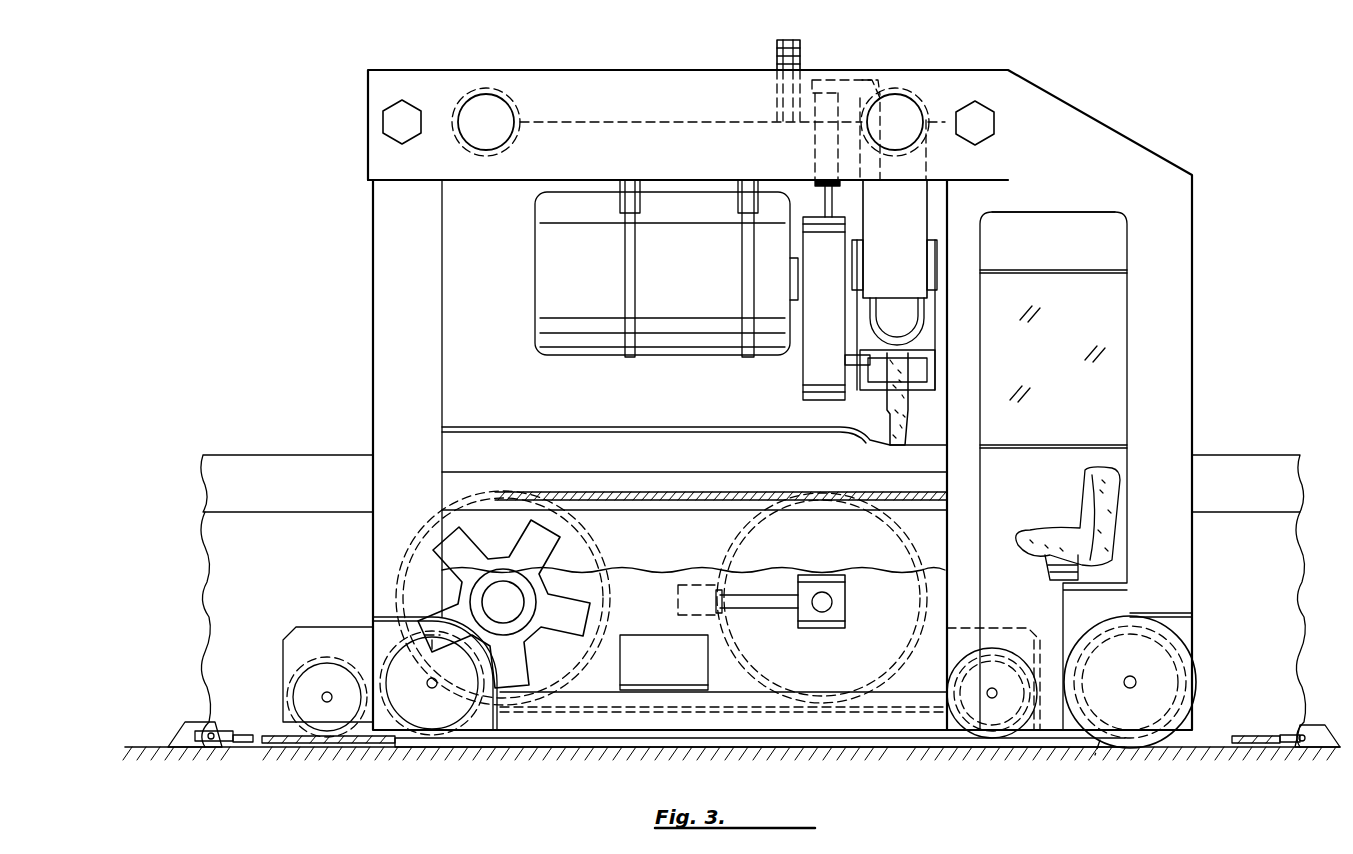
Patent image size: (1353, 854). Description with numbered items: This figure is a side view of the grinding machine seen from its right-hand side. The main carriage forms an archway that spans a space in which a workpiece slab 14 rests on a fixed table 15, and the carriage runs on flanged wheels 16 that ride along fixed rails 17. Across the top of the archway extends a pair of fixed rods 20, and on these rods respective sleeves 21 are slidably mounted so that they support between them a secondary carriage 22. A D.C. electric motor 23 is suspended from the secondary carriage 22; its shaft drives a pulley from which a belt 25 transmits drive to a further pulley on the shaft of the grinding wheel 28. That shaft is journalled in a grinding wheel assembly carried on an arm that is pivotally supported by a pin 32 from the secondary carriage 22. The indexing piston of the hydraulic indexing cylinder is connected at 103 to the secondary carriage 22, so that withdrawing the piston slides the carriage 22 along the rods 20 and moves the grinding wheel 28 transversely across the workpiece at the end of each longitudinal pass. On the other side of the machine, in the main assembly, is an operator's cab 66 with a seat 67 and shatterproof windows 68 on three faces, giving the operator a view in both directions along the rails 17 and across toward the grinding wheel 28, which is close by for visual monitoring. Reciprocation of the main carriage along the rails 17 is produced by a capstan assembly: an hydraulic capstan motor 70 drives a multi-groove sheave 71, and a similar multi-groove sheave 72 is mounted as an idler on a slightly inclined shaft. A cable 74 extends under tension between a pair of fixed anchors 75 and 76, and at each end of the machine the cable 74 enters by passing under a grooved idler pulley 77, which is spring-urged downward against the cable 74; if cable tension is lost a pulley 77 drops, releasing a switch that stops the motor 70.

The workpiece slab 14 is at (268, 463).
The fixed table 15 is at (226, 527).
The flanged wheels 16 is at (468, 735).
The fixed rails 17 is at (898, 744).
The fixed rods 20 is at (487, 100).
The sleeves 21 is at (893, 108).
The secondary carriage 22 is at (748, 240).
The D.C. electric motor 23 is at (541, 291).
The belt 25 is at (812, 381).
The grinding wheel 28 is at (905, 432).
The pin 32 is at (920, 268).
The operator's cab 66 is at (1145, 380).
The seat 67 is at (1112, 490).
The shatterproof windows 68 is at (1100, 318).
The hydraulic capstan motor 70 is at (468, 530).
The multi-groove sheave 71 is at (583, 556).
The multi-groove sheave 72 is at (745, 538).
The cable 74 is at (682, 494).
The fixed anchor 75 is at (190, 720).
The fixed anchor 76 is at (1310, 725).
The grooved idler pulley 77 is at (326, 652).
The connection point of piston to secondary carriage 103 is at (778, 50).